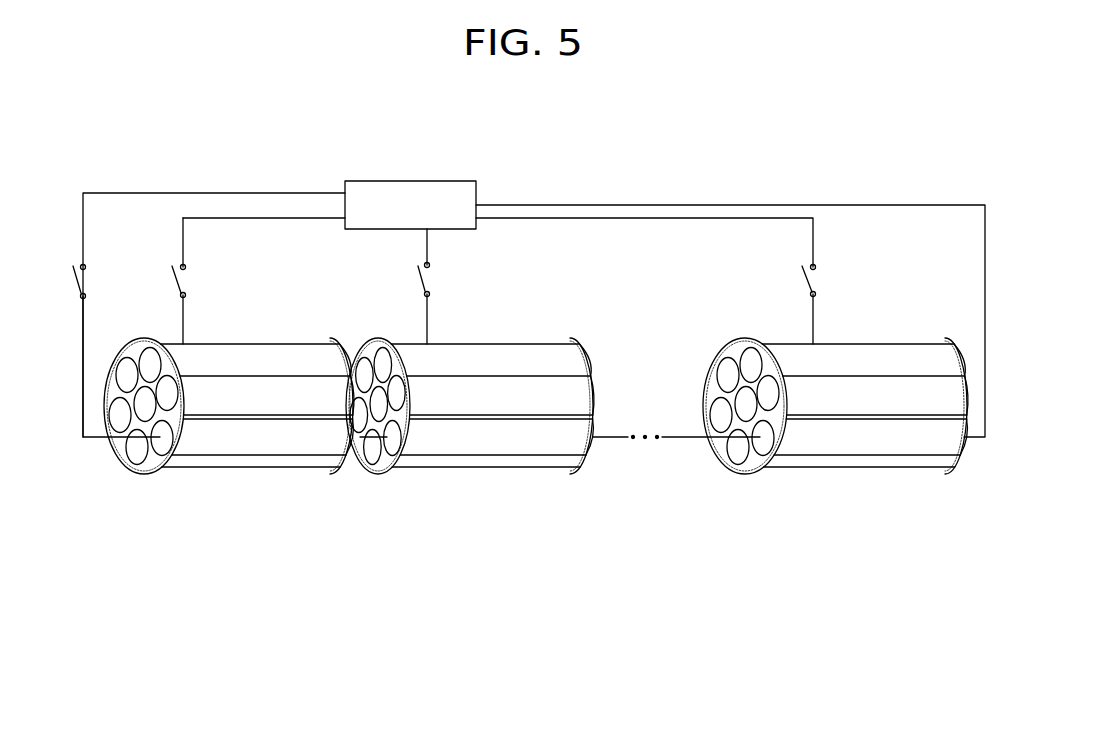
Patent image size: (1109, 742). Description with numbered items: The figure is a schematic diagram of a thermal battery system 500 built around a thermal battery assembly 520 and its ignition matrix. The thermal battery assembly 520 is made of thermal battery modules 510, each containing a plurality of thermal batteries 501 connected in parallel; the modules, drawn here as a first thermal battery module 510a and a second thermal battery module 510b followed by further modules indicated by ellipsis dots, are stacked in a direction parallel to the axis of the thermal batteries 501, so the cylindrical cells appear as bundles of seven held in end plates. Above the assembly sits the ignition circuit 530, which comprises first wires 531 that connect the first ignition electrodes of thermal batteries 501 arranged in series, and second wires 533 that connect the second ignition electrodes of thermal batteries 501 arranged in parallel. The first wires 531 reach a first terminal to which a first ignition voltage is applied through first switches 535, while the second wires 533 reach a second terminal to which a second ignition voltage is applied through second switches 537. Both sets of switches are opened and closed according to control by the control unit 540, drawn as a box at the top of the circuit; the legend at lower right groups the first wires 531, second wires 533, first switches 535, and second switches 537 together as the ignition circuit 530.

The thermal battery system 500 is at (890, 132).
The thermal battery 501 is at (835, 432).
The thermal battery module 510 is at (349, 459).
The thermal battery module 510a is at (342, 497).
The thermal battery module 510b is at (470, 437).
The thermal battery assembly 520 is at (536, 484).
The ignition circuit 530 is at (919, 708).
The first wire 531 is at (92, 438).
The second wire 533 is at (183, 322).
The first switch 535 is at (97, 278).
The second switch 537 is at (193, 277).
The control unit 540 is at (410, 183).